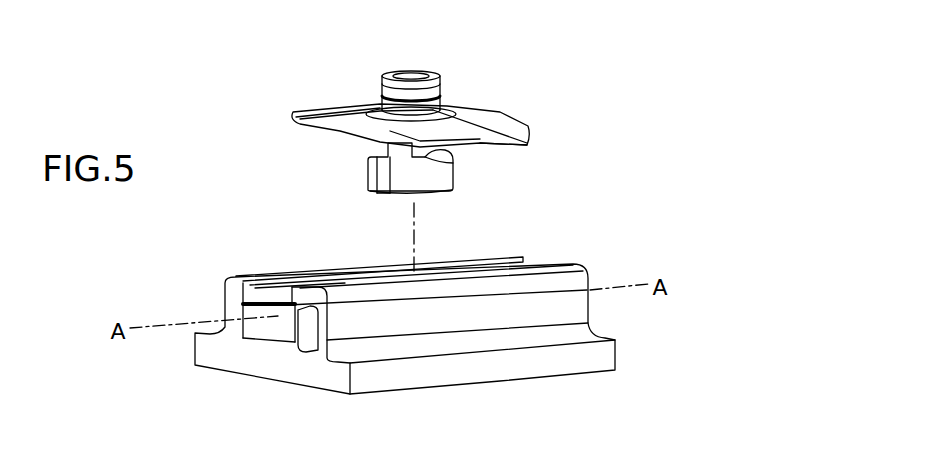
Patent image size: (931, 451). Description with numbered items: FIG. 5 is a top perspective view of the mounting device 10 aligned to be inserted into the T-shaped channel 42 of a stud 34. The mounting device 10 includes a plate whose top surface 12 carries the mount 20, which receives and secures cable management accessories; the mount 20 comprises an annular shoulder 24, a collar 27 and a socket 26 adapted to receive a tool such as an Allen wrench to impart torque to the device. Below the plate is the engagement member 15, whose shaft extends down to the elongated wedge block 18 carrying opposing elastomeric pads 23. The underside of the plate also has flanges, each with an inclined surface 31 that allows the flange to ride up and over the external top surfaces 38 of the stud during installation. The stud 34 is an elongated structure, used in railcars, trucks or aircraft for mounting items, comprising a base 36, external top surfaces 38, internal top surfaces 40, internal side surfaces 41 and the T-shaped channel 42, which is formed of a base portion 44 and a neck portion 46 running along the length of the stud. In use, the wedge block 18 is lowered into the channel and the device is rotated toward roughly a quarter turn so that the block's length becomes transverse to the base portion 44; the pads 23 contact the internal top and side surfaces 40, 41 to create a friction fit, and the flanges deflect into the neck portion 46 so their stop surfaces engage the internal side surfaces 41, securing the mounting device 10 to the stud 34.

The mounting device 10 is at (332, 76).
The top surface 12 is at (505, 130).
The engagement member 15 is at (366, 170).
The elongated wedge block 18 is at (428, 183).
The mount 20 is at (450, 87).
The elastomeric pads 23 is at (370, 186).
The annular shoulder 24 is at (383, 78).
The socket 26 is at (418, 72).
The collar 27 is at (357, 107).
The inclined surface 31 is at (497, 146).
The stud 34 is at (605, 272).
The base 36 is at (272, 365).
The external top surfaces 38 is at (270, 272).
The internal top surfaces 40 is at (263, 312).
The internal side surfaces 41 is at (302, 330).
The T-shaped channel 42 is at (532, 262).
The base portion 44 is at (290, 318).
The neck portion 46 is at (274, 294).